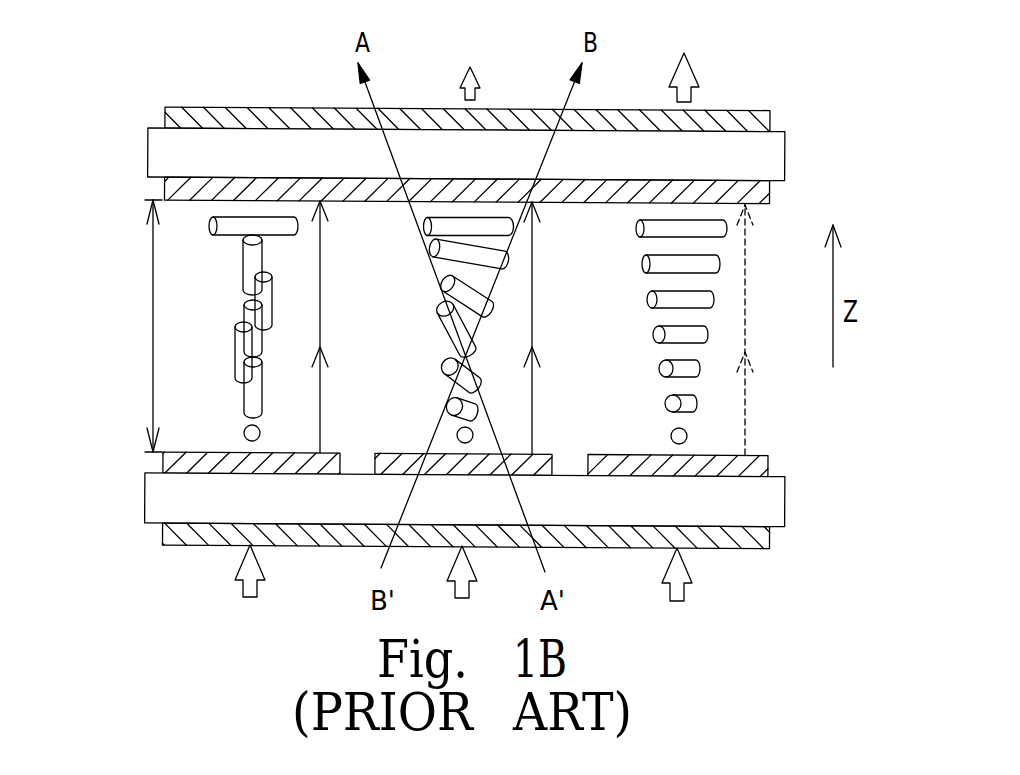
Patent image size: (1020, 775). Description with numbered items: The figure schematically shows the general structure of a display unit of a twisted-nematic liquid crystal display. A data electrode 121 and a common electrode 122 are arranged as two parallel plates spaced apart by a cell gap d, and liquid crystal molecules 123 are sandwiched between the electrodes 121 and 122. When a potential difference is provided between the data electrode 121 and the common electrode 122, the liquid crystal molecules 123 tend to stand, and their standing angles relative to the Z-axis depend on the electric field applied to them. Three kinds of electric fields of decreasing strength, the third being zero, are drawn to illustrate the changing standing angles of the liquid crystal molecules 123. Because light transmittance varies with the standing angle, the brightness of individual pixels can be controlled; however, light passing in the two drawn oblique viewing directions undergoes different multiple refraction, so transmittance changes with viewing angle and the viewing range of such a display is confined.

The data electrode 121 is at (140, 465).
The common electrode 122 is at (143, 189).
The liquid crystal molecules 123 is at (143, 320).